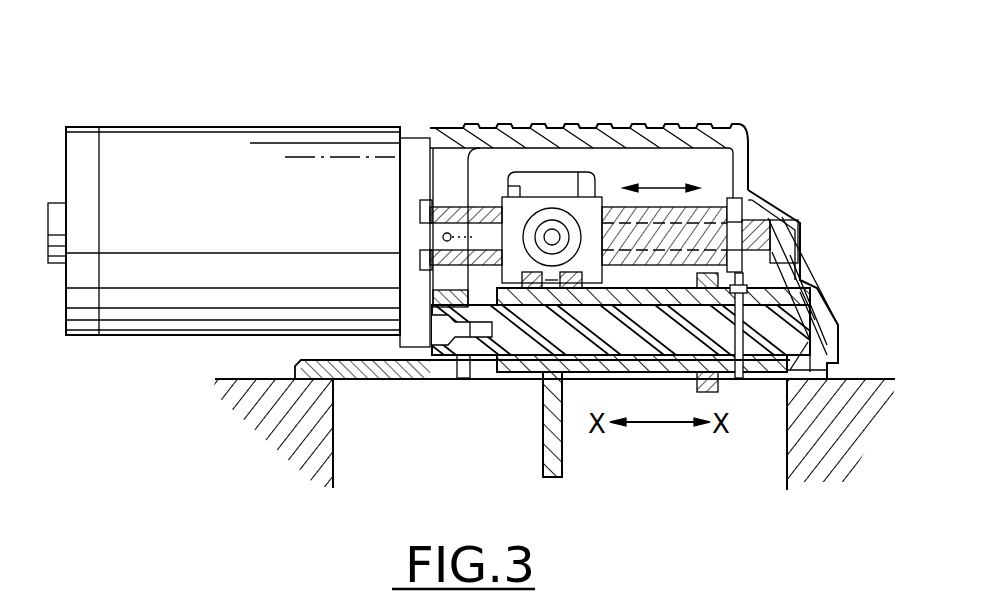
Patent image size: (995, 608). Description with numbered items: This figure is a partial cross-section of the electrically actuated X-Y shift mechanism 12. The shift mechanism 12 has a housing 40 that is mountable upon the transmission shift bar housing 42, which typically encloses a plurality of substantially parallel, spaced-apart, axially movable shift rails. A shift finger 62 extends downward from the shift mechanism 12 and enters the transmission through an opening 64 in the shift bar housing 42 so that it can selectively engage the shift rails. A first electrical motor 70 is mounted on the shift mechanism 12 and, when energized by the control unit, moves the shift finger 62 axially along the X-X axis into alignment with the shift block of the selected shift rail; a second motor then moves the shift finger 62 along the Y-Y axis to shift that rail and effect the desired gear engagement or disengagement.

The shift mechanism 12 is at (590, 63).
The first electrical motor 70 is at (287, 127).
The housing 40 is at (832, 317).
The shift bar housing 42 is at (327, 437).
The shift finger 62 is at (543, 436).
The opening 64 is at (450, 402).